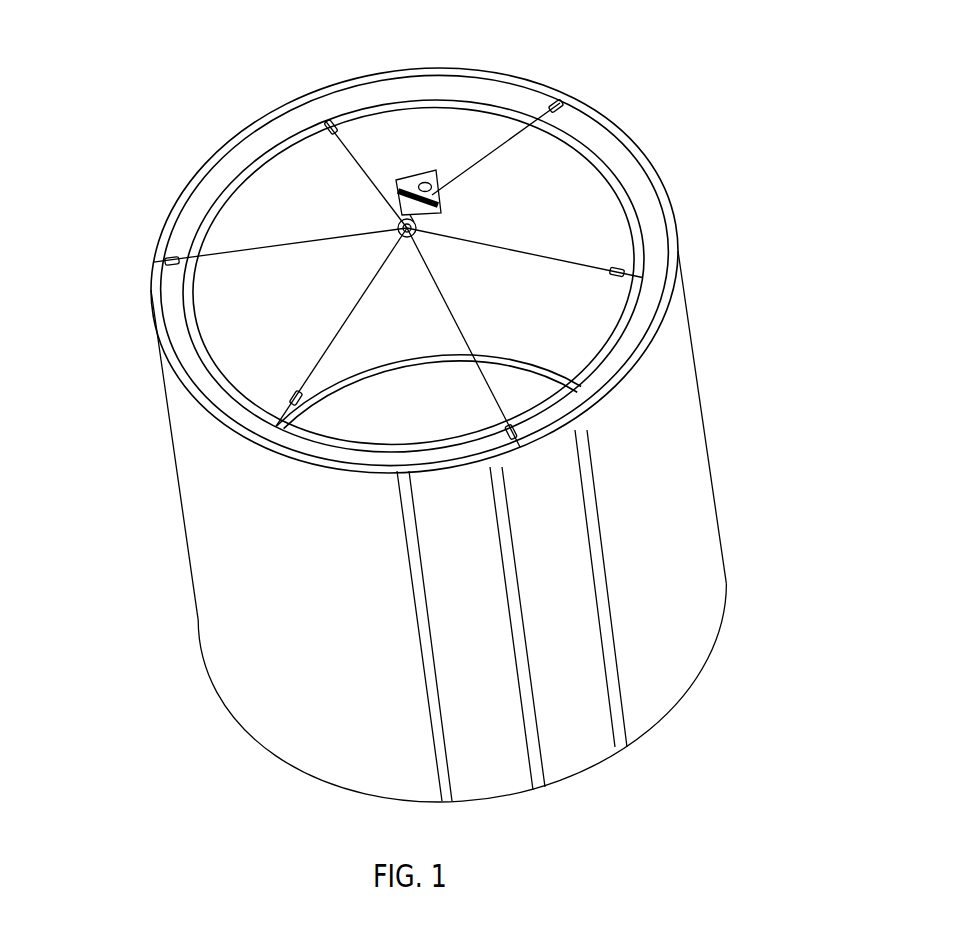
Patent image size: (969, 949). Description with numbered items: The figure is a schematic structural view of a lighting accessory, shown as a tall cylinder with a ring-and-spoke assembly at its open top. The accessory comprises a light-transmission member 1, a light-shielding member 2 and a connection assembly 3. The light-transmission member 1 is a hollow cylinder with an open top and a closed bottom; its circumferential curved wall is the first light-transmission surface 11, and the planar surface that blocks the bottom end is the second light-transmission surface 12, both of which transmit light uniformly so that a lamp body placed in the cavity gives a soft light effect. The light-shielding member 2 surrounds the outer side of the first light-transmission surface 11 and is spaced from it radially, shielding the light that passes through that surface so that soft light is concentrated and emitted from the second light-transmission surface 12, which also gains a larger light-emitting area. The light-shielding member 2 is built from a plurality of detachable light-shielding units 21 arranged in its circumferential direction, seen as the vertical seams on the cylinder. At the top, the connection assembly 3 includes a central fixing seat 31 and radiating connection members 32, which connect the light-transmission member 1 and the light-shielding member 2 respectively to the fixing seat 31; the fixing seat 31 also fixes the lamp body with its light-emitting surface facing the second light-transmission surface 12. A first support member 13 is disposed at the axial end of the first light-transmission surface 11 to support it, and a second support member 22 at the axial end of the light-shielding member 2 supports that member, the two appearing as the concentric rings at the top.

The light-transmission member 1 is at (359, 325).
The first light-transmission surface 11 is at (264, 310).
The second light-transmission surface 12 is at (383, 413).
The first support member 13 is at (177, 331).
The light-shielding member 2 is at (499, 414).
The light-shielding unit 21 is at (551, 517).
The second support member 22 is at (677, 195).
The connection assembly 3 is at (386, 224).
The fixing seat 31 is at (392, 166).
The connection member 32 is at (341, 155).